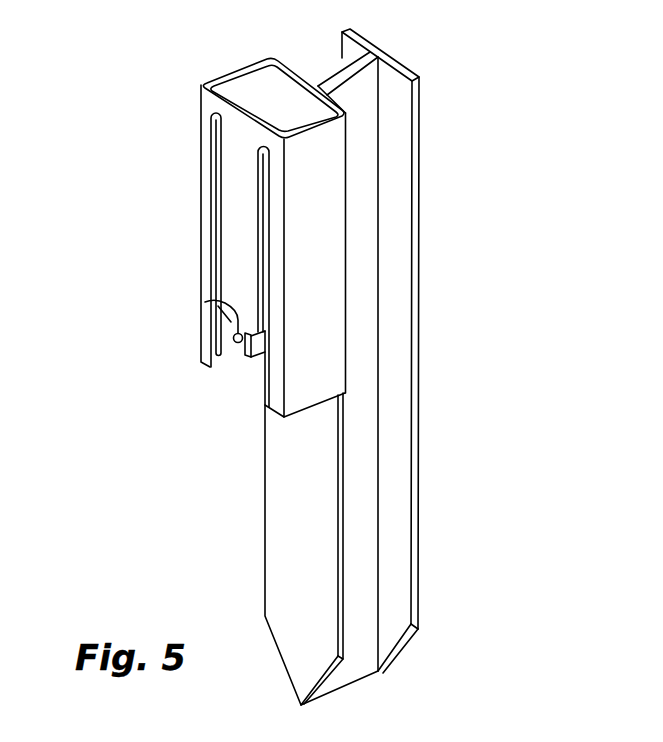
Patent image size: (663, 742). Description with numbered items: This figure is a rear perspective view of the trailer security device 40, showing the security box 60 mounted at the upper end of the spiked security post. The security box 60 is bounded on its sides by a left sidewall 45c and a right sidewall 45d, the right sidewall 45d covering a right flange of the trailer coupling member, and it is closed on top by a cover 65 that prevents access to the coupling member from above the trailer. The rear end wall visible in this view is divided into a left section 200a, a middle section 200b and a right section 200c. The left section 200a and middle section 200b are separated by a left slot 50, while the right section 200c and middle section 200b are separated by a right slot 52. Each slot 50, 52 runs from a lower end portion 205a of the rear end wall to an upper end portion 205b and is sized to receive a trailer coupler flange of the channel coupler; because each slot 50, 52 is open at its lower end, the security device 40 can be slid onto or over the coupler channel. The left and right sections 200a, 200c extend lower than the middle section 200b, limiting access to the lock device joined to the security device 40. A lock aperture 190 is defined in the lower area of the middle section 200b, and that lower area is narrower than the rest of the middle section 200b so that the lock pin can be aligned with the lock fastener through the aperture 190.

The trailer security device 40 is at (472, 103).
The left sidewall 45c is at (233, 348).
The right sidewall 45d is at (317, 381).
The left slot 50 is at (222, 200).
The right slot 52 is at (253, 366).
The security box 60 is at (202, 85).
The cover 65 is at (259, 87).
The lock aperture 190 is at (205, 302).
The left section 200a is at (212, 135).
The middle section 200b is at (246, 218).
The right section 200c is at (272, 268).
The lower end portion 205a is at (266, 380).
The upper end portion 205b is at (208, 106).